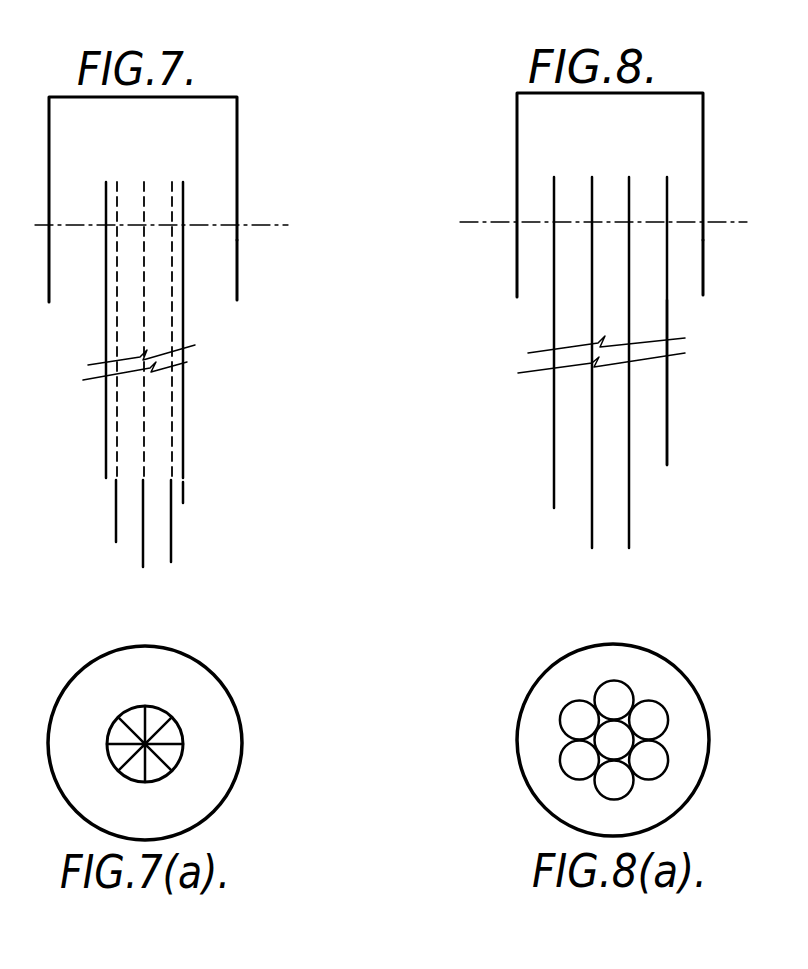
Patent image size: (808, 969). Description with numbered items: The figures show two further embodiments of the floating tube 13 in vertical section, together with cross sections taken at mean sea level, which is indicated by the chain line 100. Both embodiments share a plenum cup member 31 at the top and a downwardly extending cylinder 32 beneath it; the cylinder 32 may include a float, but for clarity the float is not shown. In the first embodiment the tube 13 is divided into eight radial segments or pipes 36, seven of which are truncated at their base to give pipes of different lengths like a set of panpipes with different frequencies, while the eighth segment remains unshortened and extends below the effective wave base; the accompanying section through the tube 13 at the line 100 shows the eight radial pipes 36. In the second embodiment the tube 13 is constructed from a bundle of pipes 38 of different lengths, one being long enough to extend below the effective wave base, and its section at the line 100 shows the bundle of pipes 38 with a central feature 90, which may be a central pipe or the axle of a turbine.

In FIG. 7, the floating tube 13 is at (190, 433).
In FIG. 8, the floating tube 13 is at (680, 412).
In FIG. 7A, the floating tube 13 is at (183, 757).
In FIG. 8A, the floating tube 13 is at (680, 730).
In FIG. 7, the plenum cup member 31 is at (208, 137).
In FIG. 8, the plenum cup member 31 is at (670, 148).
In FIG. 7A, the plenum cup member 31 is at (240, 772).
In FIG. 8A, the plenum cup member 31 is at (707, 758).
In FIG. 7, the downwardly extending cylinder 32 is at (237, 283).
In FIG. 8, the downwardly extending cylinder 32 is at (703, 277).
In FIG. 7, the radial segments or pipes 36 is at (163, 523).
In FIG. 7A, the radial segments or pipes 36 is at (172, 732).
In FIG. 8, the bundle of pipes 38 is at (640, 452).
In FIG. 8A, the bundle of pipes 38 is at (648, 717).
In FIG. 8A, the central pipe or turbine axle 90 is at (617, 743).
In FIG. 7, the chain line indicating mean sea level 100 is at (275, 223).
In FIG. 8, the chain line indicating mean sea level 100 is at (475, 222).